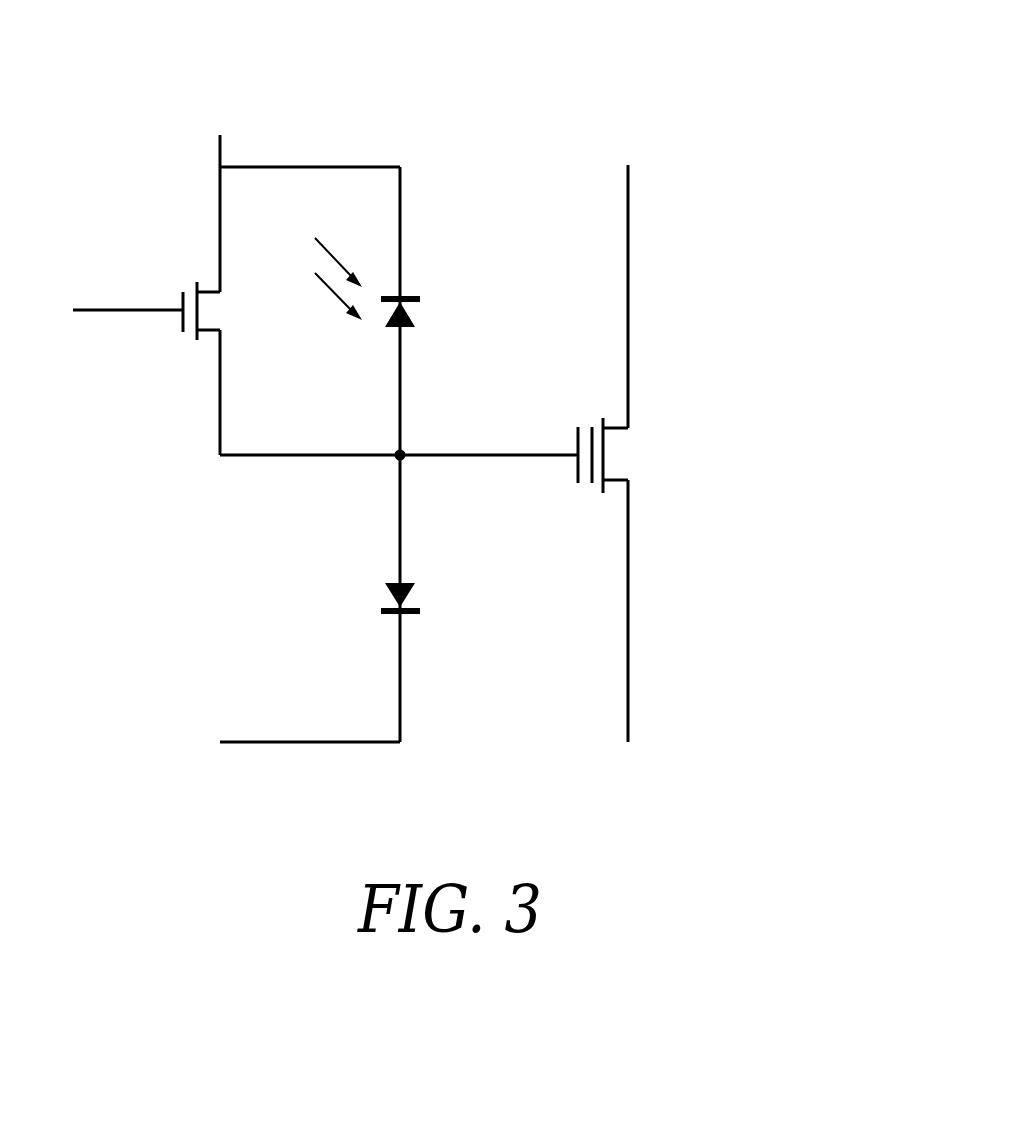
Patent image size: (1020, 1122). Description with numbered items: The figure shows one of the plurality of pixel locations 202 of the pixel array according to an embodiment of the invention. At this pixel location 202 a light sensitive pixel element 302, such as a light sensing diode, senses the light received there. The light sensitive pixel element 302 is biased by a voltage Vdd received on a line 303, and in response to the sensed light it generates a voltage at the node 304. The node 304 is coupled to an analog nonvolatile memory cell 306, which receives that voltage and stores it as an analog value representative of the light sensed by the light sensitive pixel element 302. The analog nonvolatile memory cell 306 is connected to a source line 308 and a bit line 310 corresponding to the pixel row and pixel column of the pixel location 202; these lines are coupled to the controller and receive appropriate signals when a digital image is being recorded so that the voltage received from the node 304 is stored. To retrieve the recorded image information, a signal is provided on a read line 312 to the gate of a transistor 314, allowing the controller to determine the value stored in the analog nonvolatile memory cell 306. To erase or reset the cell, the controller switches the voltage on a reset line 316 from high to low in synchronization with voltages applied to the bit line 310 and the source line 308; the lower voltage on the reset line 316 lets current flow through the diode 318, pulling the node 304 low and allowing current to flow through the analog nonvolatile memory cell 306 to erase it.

The pixel location 202 is at (874, 36).
The line 303 is at (222, 152).
The read line 312 is at (98, 310).
The transistor 314 is at (185, 383).
The light sensitive pixel element 302 is at (408, 293).
The node 304 is at (403, 450).
The analog nonvolatile memory cell 306 is at (578, 380).
The bit line 310 is at (627, 185).
The source line 308 is at (628, 732).
The diode 318 is at (403, 585).
The reset line 316 is at (252, 743).